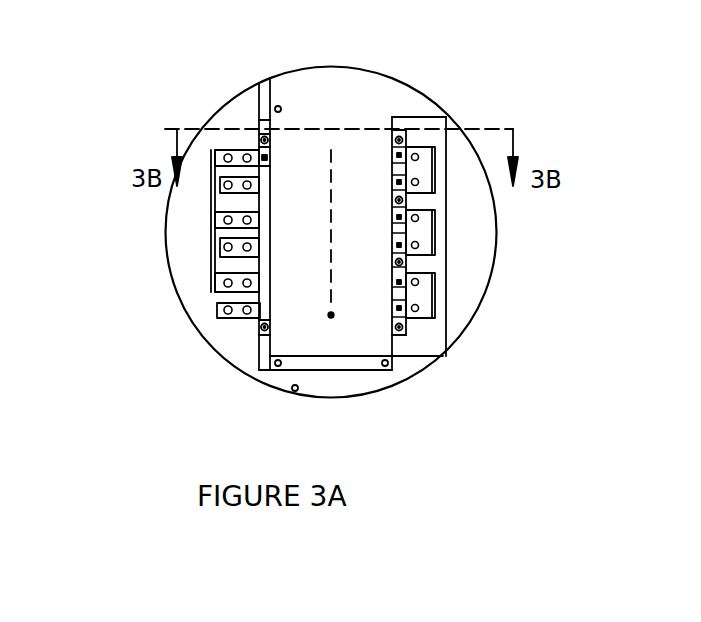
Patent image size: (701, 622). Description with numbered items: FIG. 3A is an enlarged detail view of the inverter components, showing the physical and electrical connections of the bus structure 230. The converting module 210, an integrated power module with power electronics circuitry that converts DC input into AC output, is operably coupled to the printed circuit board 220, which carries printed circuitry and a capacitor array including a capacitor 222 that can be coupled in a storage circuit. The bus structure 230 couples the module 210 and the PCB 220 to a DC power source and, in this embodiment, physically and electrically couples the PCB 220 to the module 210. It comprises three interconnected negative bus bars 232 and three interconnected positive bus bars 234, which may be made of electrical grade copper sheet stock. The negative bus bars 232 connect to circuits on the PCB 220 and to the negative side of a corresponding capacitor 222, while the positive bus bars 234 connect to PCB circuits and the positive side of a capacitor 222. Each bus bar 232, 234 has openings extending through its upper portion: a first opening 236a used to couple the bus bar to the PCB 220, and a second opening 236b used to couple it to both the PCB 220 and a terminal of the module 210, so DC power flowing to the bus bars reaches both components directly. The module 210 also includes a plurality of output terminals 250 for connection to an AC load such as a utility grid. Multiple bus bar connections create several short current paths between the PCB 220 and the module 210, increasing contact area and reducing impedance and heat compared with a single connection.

The converting module 210 is at (373, 357).
The printed circuit board 220 is at (247, 100).
The capacitor 222 is at (177, 240).
The bus structure 230 is at (236, 337).
The negative bus bar 232 is at (262, 180).
The positive bus bar 234 is at (216, 152).
The first opening 236a is at (228, 317).
The second opening 236b is at (247, 317).
The output terminal 250 is at (444, 301).